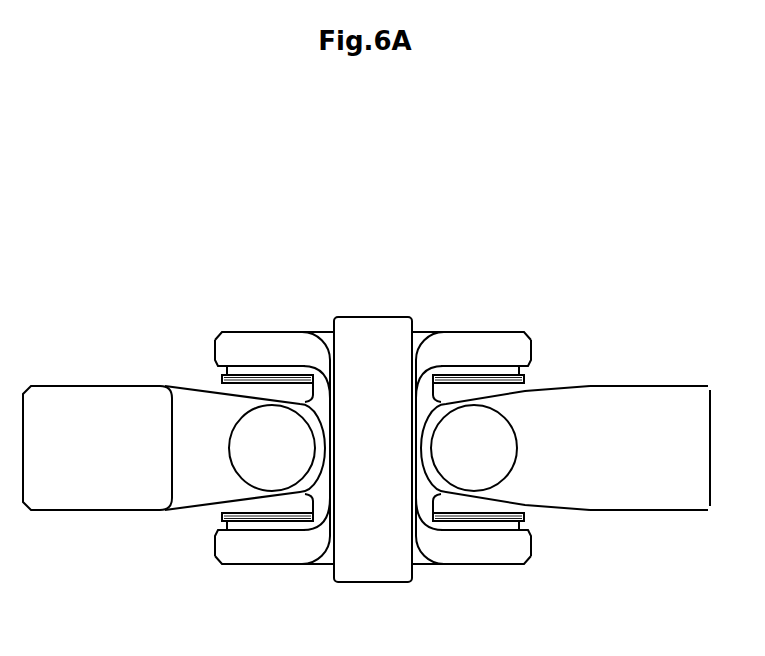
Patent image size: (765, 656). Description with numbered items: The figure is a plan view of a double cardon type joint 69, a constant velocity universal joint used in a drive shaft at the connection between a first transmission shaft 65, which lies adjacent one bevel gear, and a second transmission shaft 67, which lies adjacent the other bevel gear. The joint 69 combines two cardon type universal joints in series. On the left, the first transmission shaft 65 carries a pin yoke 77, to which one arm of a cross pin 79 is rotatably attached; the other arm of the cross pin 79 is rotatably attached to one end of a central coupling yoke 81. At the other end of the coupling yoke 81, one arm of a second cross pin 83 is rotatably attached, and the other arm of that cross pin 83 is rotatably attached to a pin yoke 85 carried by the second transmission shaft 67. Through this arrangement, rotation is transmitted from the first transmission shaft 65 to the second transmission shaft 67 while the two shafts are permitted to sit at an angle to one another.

The first transmission shaft 65 is at (107, 397).
The second transmission shaft 67 is at (678, 395).
The double cardon type joint 69 is at (551, 271).
The pin yoke 77 is at (215, 400).
The cross pin 79 is at (270, 378).
The coupling yoke 81 is at (371, 330).
The cross pin 83 is at (450, 378).
The pin yoke 85 is at (528, 400).